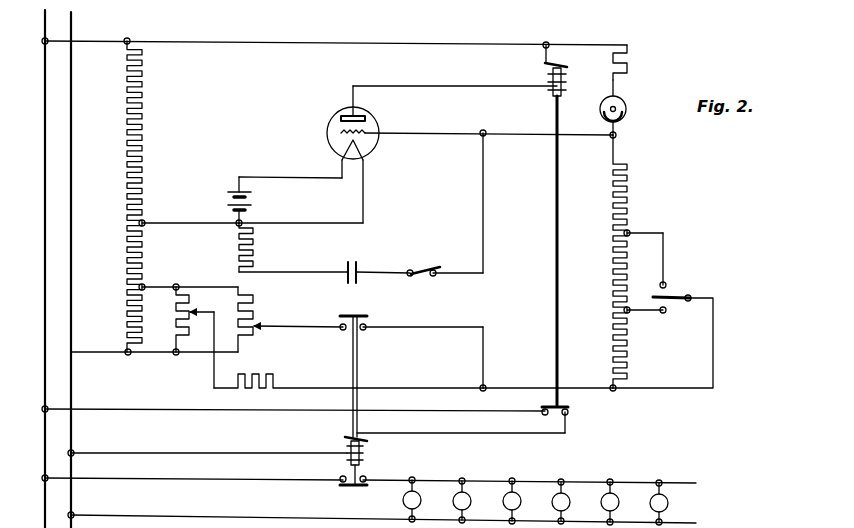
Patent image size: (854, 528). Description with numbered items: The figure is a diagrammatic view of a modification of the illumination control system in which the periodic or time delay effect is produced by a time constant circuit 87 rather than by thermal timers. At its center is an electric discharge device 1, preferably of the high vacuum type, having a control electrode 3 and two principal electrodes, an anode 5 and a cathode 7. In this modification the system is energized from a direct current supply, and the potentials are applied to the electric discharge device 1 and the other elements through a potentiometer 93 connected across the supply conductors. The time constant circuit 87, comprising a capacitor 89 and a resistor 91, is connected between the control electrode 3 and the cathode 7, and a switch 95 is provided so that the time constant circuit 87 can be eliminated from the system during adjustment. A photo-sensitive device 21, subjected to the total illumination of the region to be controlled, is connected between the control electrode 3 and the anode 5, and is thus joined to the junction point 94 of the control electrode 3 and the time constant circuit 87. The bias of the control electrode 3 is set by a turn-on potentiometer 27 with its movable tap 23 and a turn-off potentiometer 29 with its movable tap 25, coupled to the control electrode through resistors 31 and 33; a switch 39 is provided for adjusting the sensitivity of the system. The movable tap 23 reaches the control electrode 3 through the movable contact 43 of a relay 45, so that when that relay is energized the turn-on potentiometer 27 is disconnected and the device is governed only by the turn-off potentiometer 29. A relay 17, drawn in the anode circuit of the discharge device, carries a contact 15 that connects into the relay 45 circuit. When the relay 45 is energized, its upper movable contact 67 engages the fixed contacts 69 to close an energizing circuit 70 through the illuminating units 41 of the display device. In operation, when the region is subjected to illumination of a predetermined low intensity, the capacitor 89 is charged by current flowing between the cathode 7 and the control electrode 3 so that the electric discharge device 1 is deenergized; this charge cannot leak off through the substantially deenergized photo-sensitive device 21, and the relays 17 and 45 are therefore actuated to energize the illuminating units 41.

The electric discharge device 1 is at (351, 154).
The control electrode 3 is at (341, 133).
The anode 5 is at (341, 116).
The cathode 7 is at (368, 148).
The relay contact 15 is at (565, 78).
The relay 17 is at (556, 228).
The photo-sensitive device 21 is at (627, 107).
The movable tap 23 is at (258, 323).
The movable tap 25 is at (195, 310).
The turn-on potentiometer 27 is at (254, 306).
The turn-off potentiometer 29 is at (176, 317).
The resistor 31 is at (627, 201).
The resistor 33 is at (270, 374).
The switch 39 is at (672, 296).
The illuminating units 41 is at (496, 510).
The movable contact 43 is at (360, 317).
The relay 45 is at (333, 446).
The upper movable contact 67 is at (335, 496).
The fixed contacts 69 is at (352, 479).
The energizing circuit 70 is at (227, 509).
The time constant circuit 87 is at (433, 218).
The capacitor 89 is at (354, 262).
The resistor 91 is at (254, 256).
The potentiometer 93 is at (143, 173).
The junction point 94 is at (483, 130).
The switch 95 is at (423, 268).